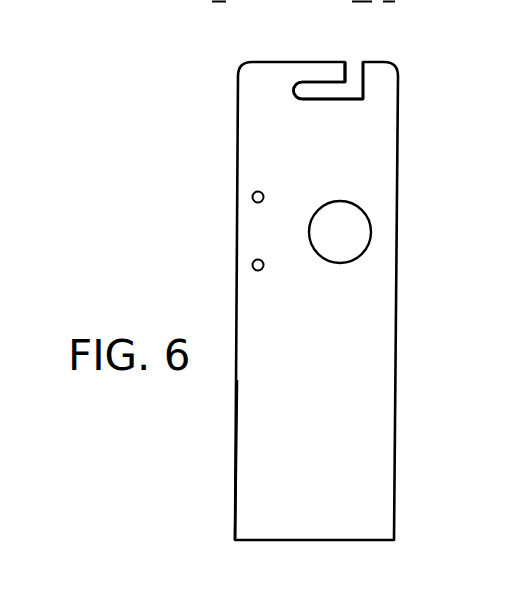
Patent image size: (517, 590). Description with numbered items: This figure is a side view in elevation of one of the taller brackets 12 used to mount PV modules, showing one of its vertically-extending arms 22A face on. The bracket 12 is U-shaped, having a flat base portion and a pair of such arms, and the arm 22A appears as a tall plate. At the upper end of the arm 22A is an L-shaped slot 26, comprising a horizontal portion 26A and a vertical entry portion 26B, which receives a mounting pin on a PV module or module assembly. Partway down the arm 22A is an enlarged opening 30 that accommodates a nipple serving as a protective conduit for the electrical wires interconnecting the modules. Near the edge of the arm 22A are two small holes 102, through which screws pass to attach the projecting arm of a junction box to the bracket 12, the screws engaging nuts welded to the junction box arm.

The bracket 12 is at (218, 128).
The arm 22A is at (260, 412).
The L-shaped slot 26 is at (361, 46).
The horizontal portion 26A is at (324, 91).
The vertical entry portion 26B is at (350, 71).
The enlarged opening 30 is at (352, 247).
The holes 102 is at (252, 194).